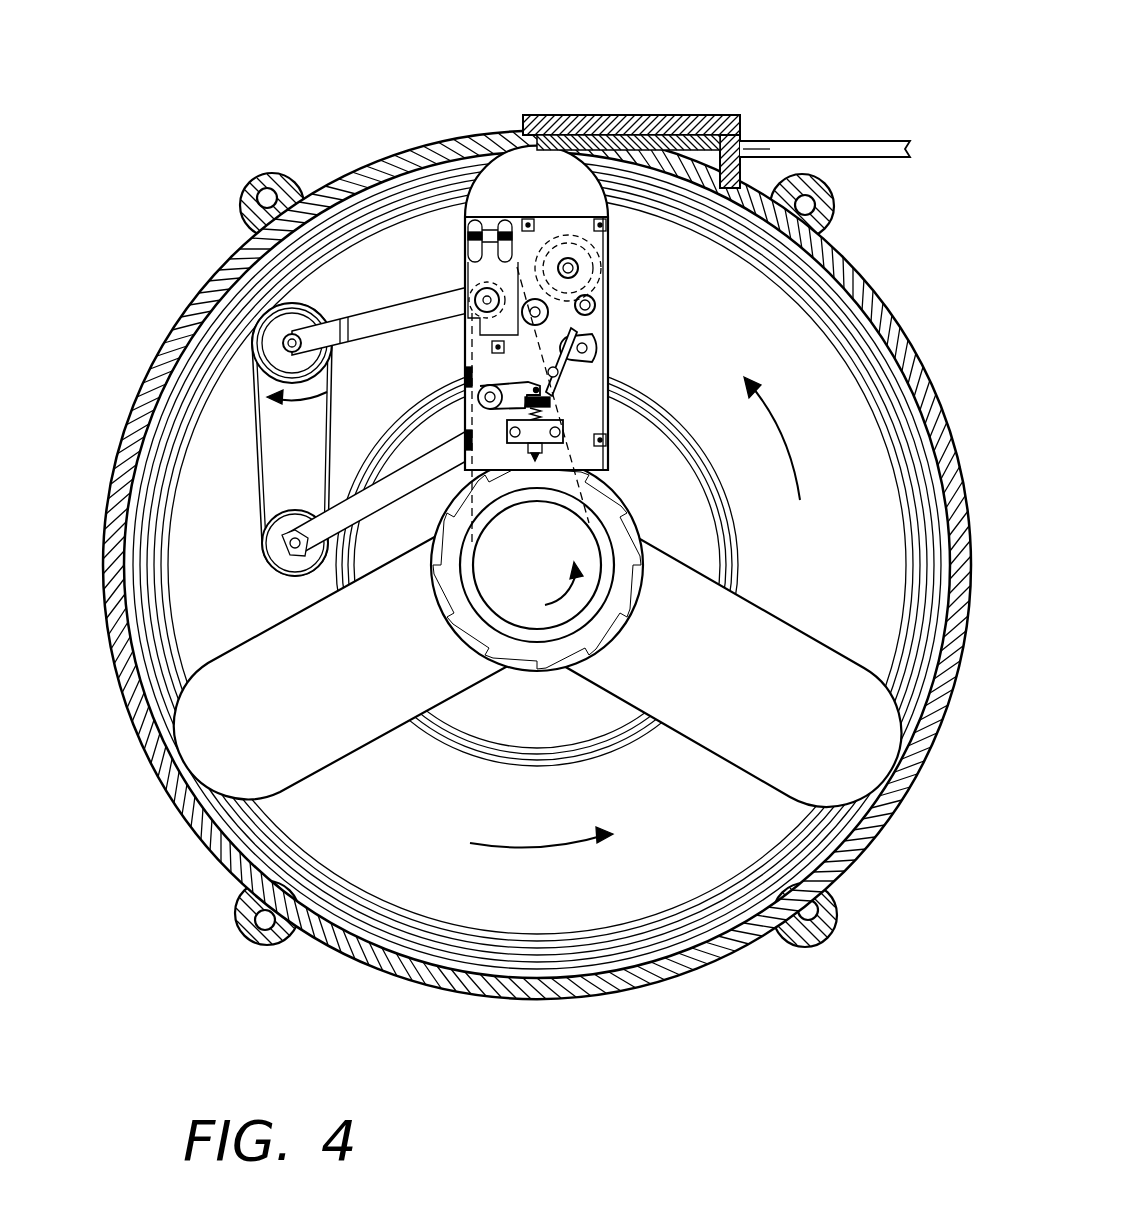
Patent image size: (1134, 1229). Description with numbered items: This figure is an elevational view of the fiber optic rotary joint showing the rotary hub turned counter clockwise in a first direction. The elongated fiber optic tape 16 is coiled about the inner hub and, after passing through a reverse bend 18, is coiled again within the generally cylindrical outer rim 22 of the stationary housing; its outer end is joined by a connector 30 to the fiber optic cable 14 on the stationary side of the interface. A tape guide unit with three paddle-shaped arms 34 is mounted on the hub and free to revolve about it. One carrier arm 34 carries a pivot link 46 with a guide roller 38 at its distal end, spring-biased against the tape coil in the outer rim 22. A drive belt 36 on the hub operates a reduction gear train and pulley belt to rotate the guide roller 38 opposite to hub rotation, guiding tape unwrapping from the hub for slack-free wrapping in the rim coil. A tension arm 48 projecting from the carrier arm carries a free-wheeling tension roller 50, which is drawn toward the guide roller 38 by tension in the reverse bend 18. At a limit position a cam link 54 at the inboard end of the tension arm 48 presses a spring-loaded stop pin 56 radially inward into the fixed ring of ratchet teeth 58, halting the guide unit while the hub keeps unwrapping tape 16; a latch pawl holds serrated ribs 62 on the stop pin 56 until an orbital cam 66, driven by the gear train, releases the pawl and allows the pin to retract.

The fiber optic cable 14 is at (865, 147).
The fiber optic tape 16 is at (733, 572).
The reverse bend 18 is at (258, 425).
The outer rim 22 is at (587, 947).
The connector 30 is at (675, 114).
The paddle-shaped arms 34 is at (850, 755).
The drive belt 36 is at (595, 495).
The guide roller 38 is at (273, 327).
The pivot link 46 is at (388, 333).
The tension arm 48 is at (335, 505).
The tension roller 50 is at (272, 556).
The cam link 54 is at (467, 370).
The stop pin 56 is at (552, 402).
The ratchet teeth 58 is at (645, 560).
The serrated ribs 62 is at (575, 380).
The orbital cam 66 is at (600, 349).